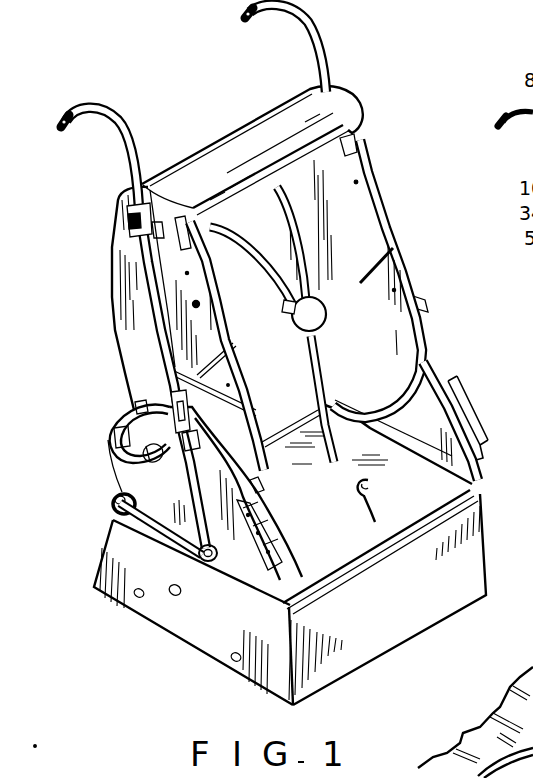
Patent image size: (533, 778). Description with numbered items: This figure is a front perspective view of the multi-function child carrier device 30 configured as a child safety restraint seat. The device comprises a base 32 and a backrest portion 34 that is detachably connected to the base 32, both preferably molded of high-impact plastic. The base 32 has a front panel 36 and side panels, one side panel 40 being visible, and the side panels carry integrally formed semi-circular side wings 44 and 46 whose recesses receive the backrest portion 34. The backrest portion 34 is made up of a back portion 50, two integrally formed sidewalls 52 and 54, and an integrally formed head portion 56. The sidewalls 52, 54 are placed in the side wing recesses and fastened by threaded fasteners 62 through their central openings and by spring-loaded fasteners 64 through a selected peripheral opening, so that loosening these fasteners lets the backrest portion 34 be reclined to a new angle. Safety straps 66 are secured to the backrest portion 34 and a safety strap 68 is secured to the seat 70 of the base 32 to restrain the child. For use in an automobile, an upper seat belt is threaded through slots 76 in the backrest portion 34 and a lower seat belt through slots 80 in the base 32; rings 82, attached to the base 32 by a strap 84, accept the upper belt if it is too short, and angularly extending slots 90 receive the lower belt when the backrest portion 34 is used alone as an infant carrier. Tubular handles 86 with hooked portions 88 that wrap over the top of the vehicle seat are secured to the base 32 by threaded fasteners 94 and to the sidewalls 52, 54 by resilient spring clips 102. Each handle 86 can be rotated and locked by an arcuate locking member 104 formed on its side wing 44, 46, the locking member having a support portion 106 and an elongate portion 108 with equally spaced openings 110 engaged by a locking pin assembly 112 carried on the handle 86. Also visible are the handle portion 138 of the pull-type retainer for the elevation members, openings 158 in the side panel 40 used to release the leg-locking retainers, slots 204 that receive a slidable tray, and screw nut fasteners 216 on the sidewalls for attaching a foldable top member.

The multi-function child carrier device 30 is at (367, 84).
The base 32 is at (474, 392).
The backrest portion 34 is at (104, 279).
The front panel 36 is at (374, 603).
The side panel 40 is at (192, 626).
The side wing 44 is at (147, 500).
The side wing 46 is at (409, 446).
The back portion 50 is at (262, 351).
The sidewall 52 is at (124, 311).
The sidewall 54 is at (375, 200).
The head portion 56 is at (272, 125).
The threaded fastener 62 is at (146, 457).
The spring-loaded fastener 64 is at (113, 436).
The safety strap 66 is at (302, 225).
The safety strap 68 is at (376, 492).
The seat 70 is at (320, 493).
The slot 76 is at (190, 215).
The slot 80 is at (478, 483).
The ring 82 is at (117, 496).
The strap 84 is at (166, 541).
The handle 86 is at (153, 347).
The hooked portion 88 is at (111, 113).
The angularly extending slot 90 is at (234, 345).
The threaded fastener 94 is at (204, 563).
The resilient spring clip 102 is at (128, 226).
The arcuate locking member 104 is at (133, 414).
The support portion 106 is at (287, 545).
The elongate portion 108 is at (136, 400).
The opening 110 is at (115, 459).
The locking pin assembly 112 is at (197, 406).
The handle portion 138 is at (170, 600).
The opening 158 is at (137, 600).
The slot 204 is at (248, 406).
The screw nut fastener 216 is at (202, 303).